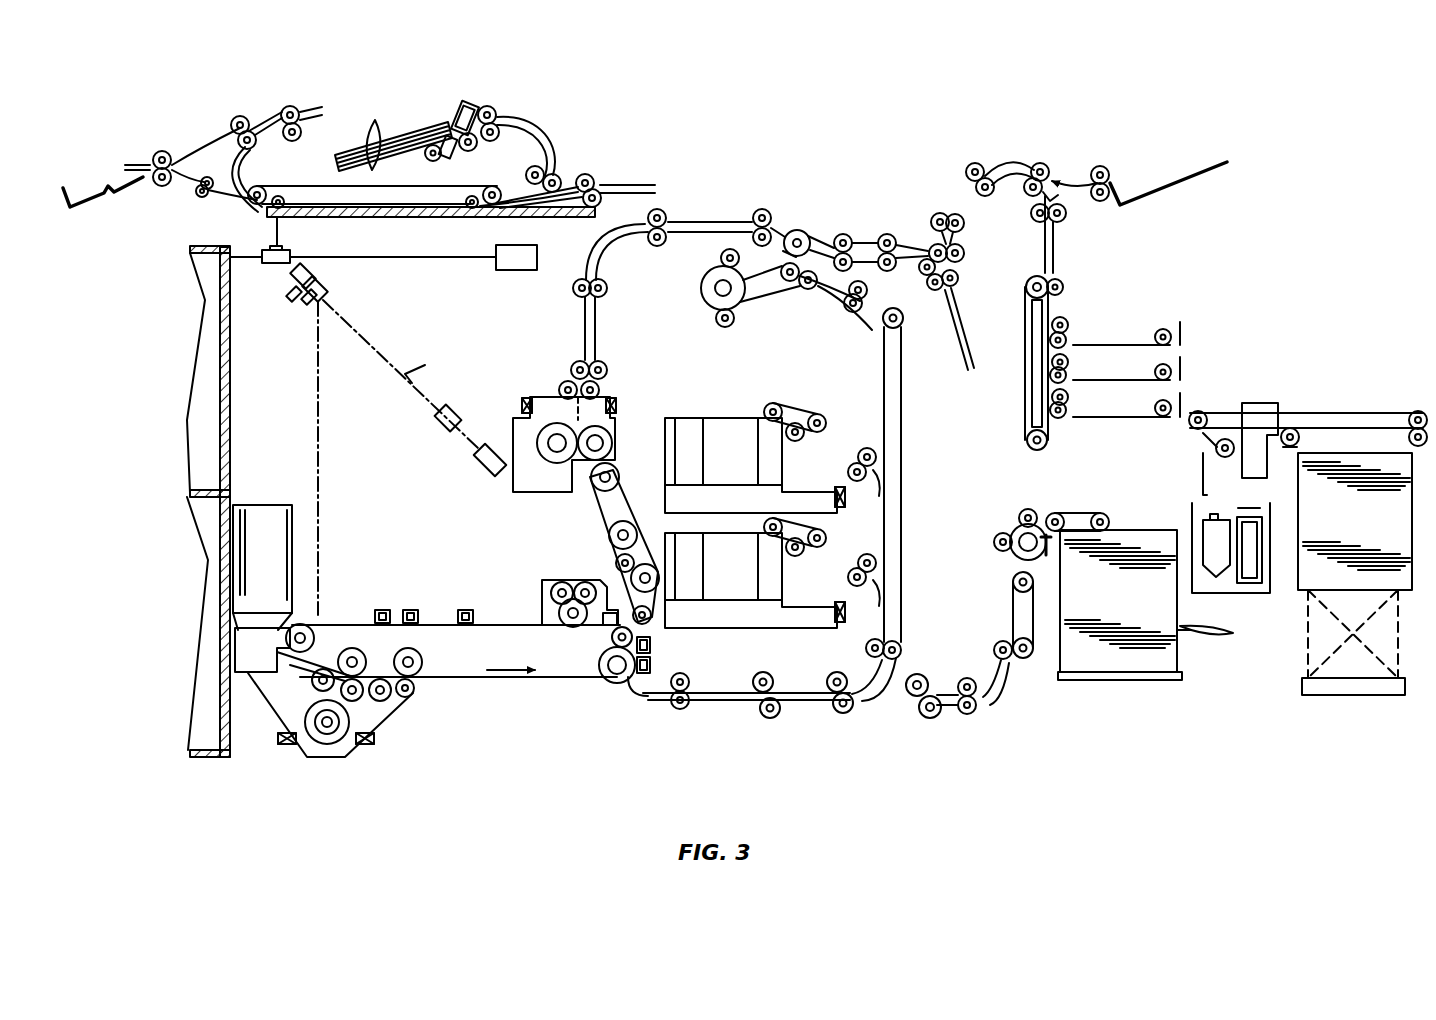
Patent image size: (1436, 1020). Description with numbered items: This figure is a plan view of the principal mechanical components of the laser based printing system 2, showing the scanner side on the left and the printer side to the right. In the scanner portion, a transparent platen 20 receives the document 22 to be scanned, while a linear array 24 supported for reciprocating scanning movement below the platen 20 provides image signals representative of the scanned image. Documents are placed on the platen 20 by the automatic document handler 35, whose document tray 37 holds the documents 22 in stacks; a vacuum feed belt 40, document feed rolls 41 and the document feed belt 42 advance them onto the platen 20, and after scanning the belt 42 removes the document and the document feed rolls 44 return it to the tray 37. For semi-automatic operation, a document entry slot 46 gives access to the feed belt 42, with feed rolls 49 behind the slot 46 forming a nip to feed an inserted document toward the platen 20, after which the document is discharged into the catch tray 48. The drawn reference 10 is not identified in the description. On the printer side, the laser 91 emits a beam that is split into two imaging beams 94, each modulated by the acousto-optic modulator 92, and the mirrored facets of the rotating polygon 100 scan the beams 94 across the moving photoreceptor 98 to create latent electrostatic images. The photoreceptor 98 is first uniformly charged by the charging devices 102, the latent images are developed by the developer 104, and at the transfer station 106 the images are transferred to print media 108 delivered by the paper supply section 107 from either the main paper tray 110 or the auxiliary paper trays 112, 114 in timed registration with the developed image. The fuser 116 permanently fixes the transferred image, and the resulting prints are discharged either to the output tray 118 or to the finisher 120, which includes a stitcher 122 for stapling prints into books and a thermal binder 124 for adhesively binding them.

The printing system 2 is at (778, 137).
The paper feed section 10 is at (188, 134).
The transparent platen 20 is at (427, 217).
The document 22 is at (372, 131).
The linear array 24 is at (265, 249).
The automatic document handler 35 is at (397, 116).
The document tray 37 is at (380, 160).
The vacuum feed belt 40 is at (473, 148).
The document feed rolls 41 is at (491, 114).
The document feed belt 42 is at (437, 187).
The document feed rolls 44 is at (258, 142).
The document entry slot 46 is at (618, 178).
The catch tray 48 is at (127, 186).
The feed rolls 49 is at (589, 177).
The laser 91 is at (483, 472).
The acousto-optic modulator 92 is at (453, 413).
The imaging beams 94 is at (423, 368).
The photoreceptor 98 is at (495, 625).
The rotating polygon 100 is at (308, 293).
The charging devices 102 is at (410, 610).
The developer 104 is at (413, 713).
The transfer station 106 is at (620, 696).
The paper supply section 107 is at (1168, 500).
The print media 108 is at (1233, 635).
The main paper tray 110 is at (1098, 678).
The auxiliary paper tray 112 is at (748, 605).
The auxiliary paper tray 114 is at (720, 423).
The fuser 116 is at (628, 426).
The output tray 118 is at (1198, 172).
The finisher 120 is at (1233, 345).
The stitcher 122 is at (1180, 357).
The thermal binder 124 is at (1334, 402).